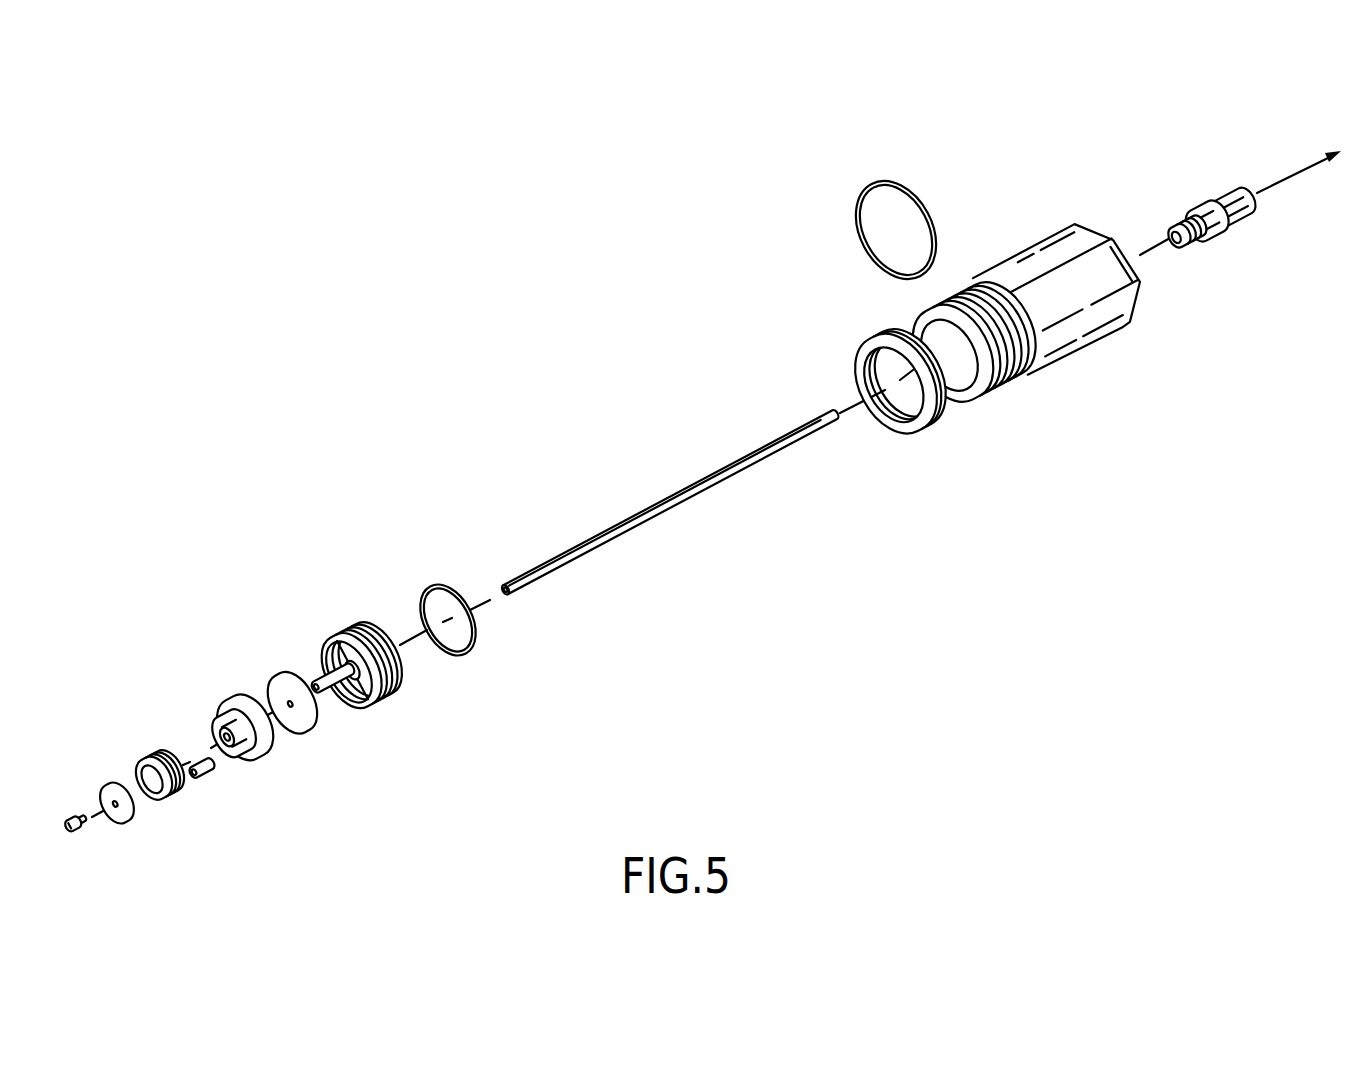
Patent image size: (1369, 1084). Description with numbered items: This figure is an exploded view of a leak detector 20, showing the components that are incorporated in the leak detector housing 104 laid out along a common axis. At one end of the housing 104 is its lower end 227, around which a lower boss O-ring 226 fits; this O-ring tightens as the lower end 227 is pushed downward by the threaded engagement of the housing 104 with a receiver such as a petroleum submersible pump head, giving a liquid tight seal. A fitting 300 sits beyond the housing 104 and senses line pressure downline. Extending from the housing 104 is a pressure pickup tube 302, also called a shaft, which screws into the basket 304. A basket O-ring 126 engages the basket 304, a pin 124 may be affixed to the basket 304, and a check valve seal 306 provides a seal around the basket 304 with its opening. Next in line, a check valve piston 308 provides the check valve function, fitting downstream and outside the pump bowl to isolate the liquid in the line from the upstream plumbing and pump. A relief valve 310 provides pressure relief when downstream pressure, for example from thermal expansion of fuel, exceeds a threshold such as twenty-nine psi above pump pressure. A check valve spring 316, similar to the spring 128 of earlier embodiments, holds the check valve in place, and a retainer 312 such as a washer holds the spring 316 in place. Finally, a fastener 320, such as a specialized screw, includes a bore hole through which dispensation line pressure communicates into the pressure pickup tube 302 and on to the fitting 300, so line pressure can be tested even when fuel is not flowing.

The leak detector 20 is at (1009, 171).
The housing 104 is at (1057, 363).
The pin 124 is at (323, 675).
The basket O-ring 126 is at (428, 590).
The spring 128 is at (140, 753).
The lower boss O-ring 226 is at (862, 183).
The lower end 227 is at (920, 430).
The fitting 300 is at (1222, 230).
The pressure pickup tube 302 is at (680, 503).
The basket 304 is at (390, 693).
The check valve seal 306 is at (317, 720).
The check valve piston 308 is at (232, 697).
The relief valve 310 is at (212, 775).
The retainer 312 is at (130, 820).
The check valve spring 316 is at (125, 749).
The fastener 320 is at (75, 832).